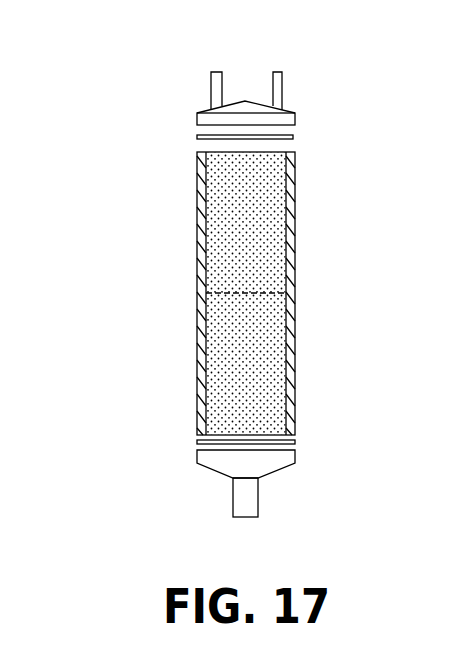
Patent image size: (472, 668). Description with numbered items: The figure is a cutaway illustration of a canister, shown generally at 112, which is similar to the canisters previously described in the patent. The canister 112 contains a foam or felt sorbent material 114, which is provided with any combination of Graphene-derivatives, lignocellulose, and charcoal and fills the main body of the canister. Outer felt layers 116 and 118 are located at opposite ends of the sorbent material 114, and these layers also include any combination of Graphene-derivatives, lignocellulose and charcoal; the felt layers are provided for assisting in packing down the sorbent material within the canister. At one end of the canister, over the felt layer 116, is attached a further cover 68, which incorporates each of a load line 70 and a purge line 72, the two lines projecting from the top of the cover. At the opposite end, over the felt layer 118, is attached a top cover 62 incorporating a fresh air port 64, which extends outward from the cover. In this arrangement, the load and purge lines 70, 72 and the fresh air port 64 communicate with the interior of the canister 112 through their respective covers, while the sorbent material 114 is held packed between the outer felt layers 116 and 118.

The canister 112 is at (132, 217).
The foam or felt sorbent material 114 is at (211, 267).
The further cover 68 is at (197, 120).
The load line 70 is at (215, 72).
The purge line 72 is at (276, 72).
The outer felt layer 116 is at (291, 137).
The outer felt layer 118 is at (197, 447).
The top cover 62 is at (295, 458).
The fresh air port 64 is at (245, 517).